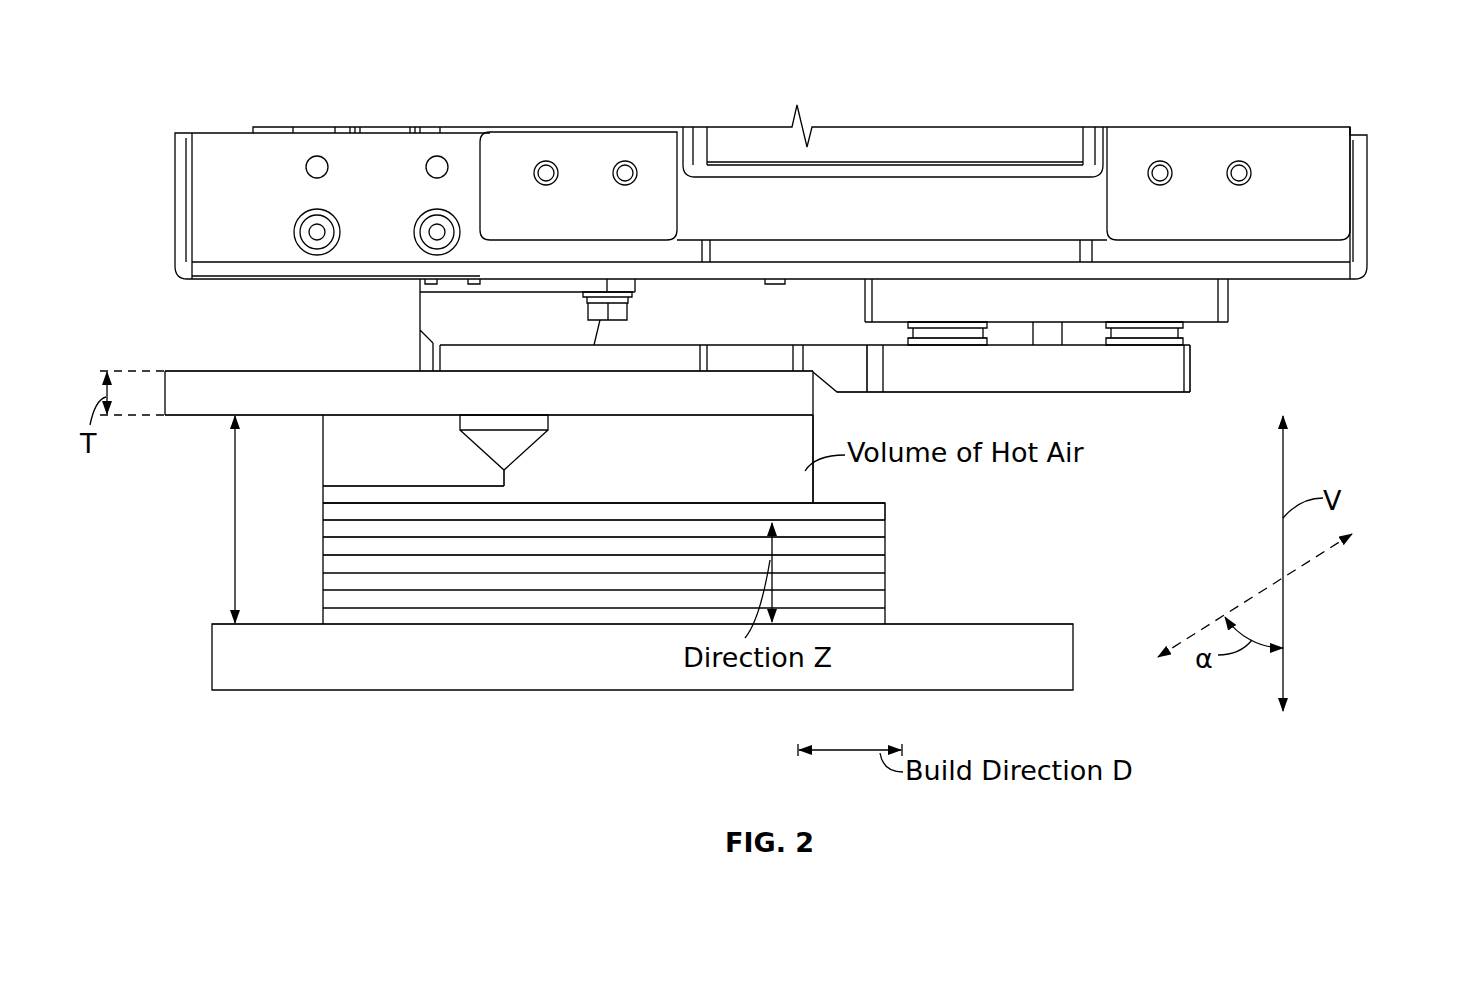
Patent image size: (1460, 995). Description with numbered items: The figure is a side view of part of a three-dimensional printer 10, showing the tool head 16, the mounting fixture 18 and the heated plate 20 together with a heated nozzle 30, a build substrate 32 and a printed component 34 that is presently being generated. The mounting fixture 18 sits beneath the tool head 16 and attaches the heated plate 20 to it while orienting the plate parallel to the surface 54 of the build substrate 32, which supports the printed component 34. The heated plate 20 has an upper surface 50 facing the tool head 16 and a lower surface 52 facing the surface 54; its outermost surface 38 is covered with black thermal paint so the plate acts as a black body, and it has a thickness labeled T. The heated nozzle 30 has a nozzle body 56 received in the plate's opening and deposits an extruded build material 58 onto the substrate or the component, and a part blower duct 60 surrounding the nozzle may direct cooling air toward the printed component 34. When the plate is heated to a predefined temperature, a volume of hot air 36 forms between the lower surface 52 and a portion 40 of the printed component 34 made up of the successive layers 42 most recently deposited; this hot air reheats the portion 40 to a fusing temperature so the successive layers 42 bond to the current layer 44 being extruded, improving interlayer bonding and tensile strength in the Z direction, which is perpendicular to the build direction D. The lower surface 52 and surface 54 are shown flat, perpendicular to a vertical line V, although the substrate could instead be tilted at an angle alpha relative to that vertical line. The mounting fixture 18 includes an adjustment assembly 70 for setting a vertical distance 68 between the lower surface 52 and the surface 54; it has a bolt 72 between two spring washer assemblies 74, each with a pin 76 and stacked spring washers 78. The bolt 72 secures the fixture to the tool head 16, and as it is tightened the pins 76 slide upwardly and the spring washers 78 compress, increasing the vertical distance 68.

The three-dimensional printer 10 is at (1320, 78).
The tool head 16 is at (1380, 197).
The mounting fixture 18 is at (1185, 412).
The heated plate 20 is at (178, 400).
The heated nozzle 30 is at (540, 420).
The build substrate 32 is at (1060, 657).
The printed component 34 is at (898, 603).
The volume of hot air 36 is at (604, 519).
The outermost surface 38 is at (503, 410).
The portion 40 is at (890, 503).
The successive layers 42 is at (340, 563).
The current layer 44 is at (333, 495).
The upper surface 50 is at (232, 370).
The lower surface 52 is at (195, 418).
The surface 54 is at (1008, 623).
The nozzle body 56 is at (500, 443).
The extruded build material 58 is at (506, 480).
The part blower duct 60 is at (432, 318).
The vertical distance 68 is at (233, 520).
The adjustment assembly 70 is at (853, 335).
The bolt 72 is at (1052, 345).
The spring washer assemblies 74 is at (887, 315).
The pin 76 is at (930, 333).
The spring washers 78 is at (987, 323).